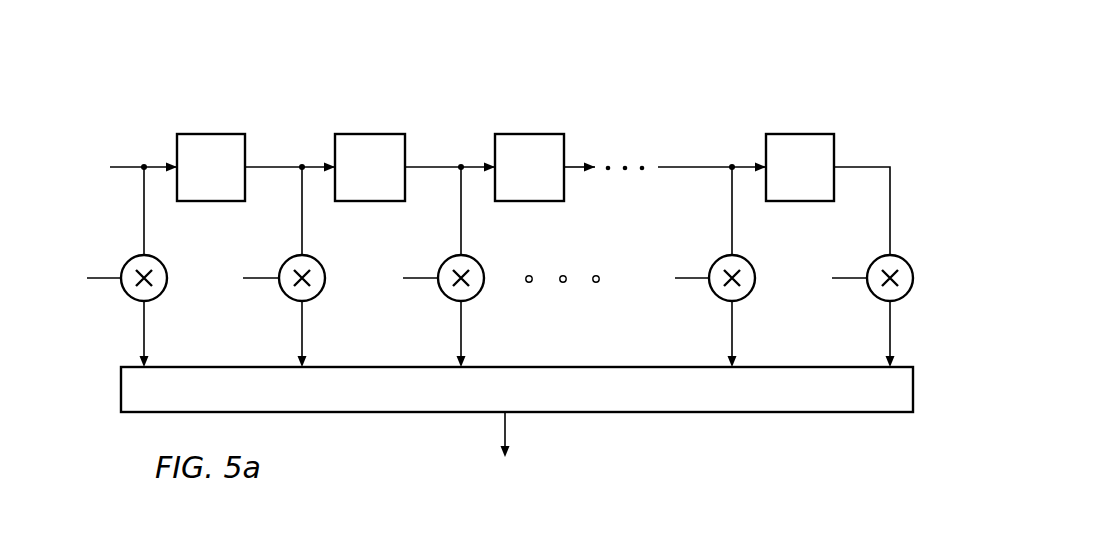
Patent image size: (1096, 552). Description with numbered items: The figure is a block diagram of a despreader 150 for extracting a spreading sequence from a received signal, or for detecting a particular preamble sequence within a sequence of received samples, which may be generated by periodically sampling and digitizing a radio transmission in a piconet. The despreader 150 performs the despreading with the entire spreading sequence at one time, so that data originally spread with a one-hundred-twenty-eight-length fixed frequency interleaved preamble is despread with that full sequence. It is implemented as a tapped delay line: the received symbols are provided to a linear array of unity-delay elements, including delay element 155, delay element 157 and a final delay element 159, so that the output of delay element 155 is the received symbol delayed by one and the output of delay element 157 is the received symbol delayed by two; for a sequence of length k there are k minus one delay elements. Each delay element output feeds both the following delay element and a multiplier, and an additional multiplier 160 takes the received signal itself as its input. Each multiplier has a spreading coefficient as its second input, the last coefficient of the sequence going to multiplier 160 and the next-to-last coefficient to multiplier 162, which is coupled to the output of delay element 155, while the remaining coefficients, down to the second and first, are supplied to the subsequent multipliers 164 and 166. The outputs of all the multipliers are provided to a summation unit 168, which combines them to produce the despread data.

The despreader 150 is at (473, 257).
The delay element 155 is at (212, 134).
The delay element 157 is at (368, 134).
The last delay element Z^-1 159 is at (800, 134).
The multiplier 160 is at (123, 289).
The multiplier 162 is at (282, 289).
The multiplier for coefficient C2 164 is at (712, 289).
The multiplier for coefficient C1 166 is at (870, 289).
The summation unit 168 is at (673, 413).